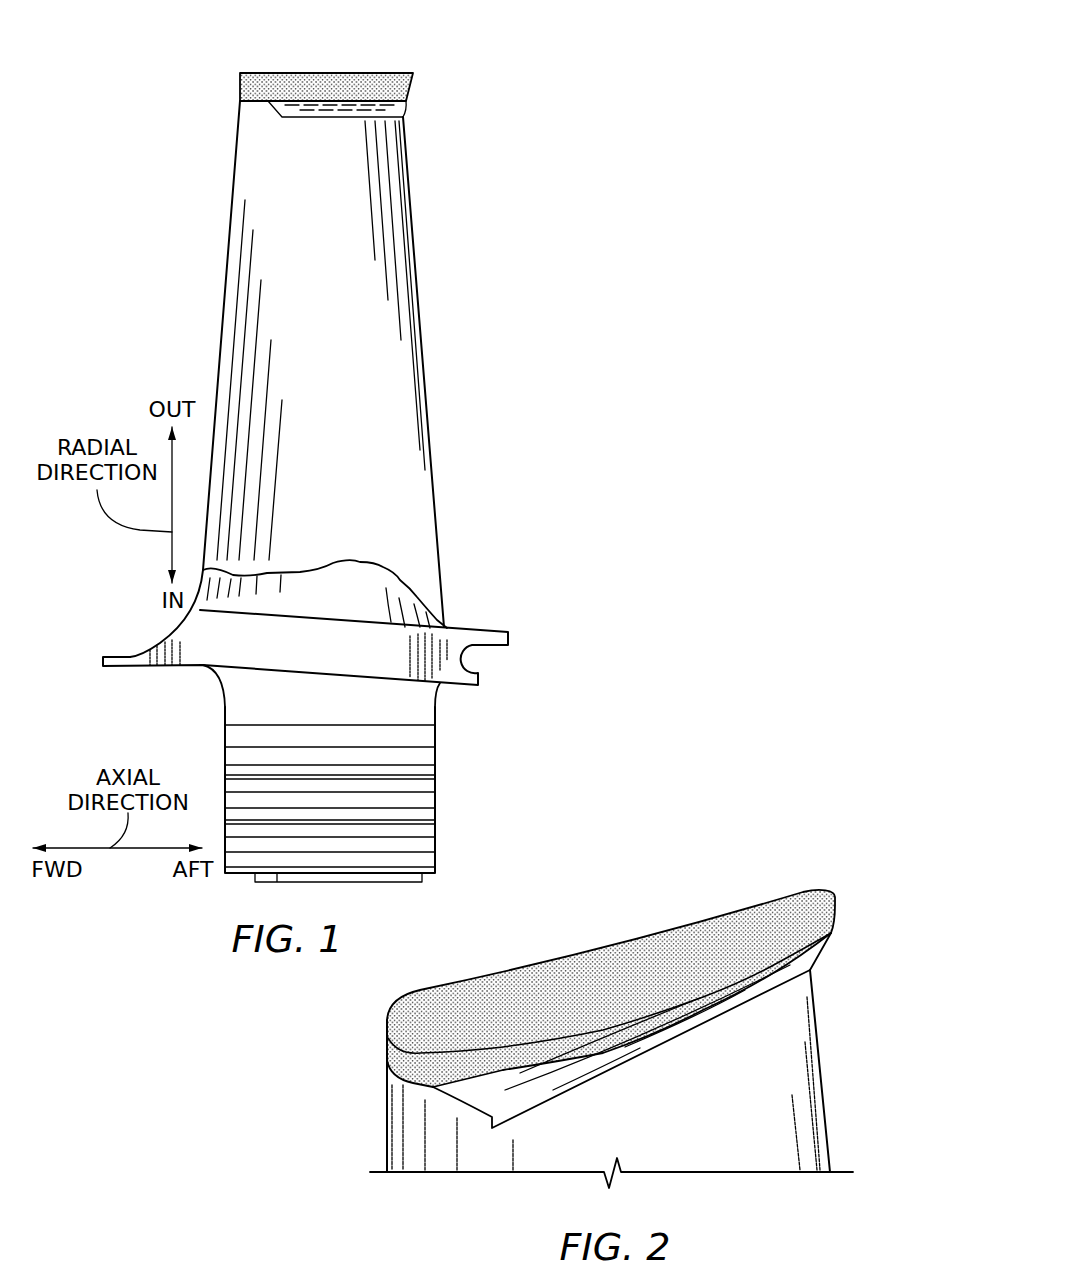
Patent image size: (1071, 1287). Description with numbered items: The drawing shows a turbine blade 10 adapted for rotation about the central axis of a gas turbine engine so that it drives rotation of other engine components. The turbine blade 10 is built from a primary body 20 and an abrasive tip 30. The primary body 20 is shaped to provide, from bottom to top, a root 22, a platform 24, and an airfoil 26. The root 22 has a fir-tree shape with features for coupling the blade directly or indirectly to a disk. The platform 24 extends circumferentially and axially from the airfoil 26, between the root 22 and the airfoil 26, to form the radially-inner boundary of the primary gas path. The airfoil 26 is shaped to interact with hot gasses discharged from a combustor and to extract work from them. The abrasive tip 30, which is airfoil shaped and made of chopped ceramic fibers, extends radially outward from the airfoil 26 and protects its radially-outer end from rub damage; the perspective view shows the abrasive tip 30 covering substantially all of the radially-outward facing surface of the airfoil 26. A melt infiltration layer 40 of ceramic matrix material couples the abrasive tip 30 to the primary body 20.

In FIG. 1, the turbine blade 10 is at (392, 444).
In FIG. 2, the turbine blade 10 is at (667, 965).
In FIG. 1, the primary body 20 is at (392, 444).
In FIG. 2, the primary body 20 is at (667, 1008).
In FIG. 1, the root 22 is at (408, 805).
In FIG. 1, the platform 24 is at (507, 640).
In FIG. 1, the airfoil 26 is at (314, 332).
In FIG. 2, the airfoil 26 is at (636, 1008).
In FIG. 1, the abrasive tip 30 is at (380, 76).
In FIG. 2, the abrasive tip 30 is at (733, 923).
In FIG. 1, the melt infiltration layer 40 is at (393, 103).
In FIG. 2, the melt infiltration layer 40 is at (783, 963).